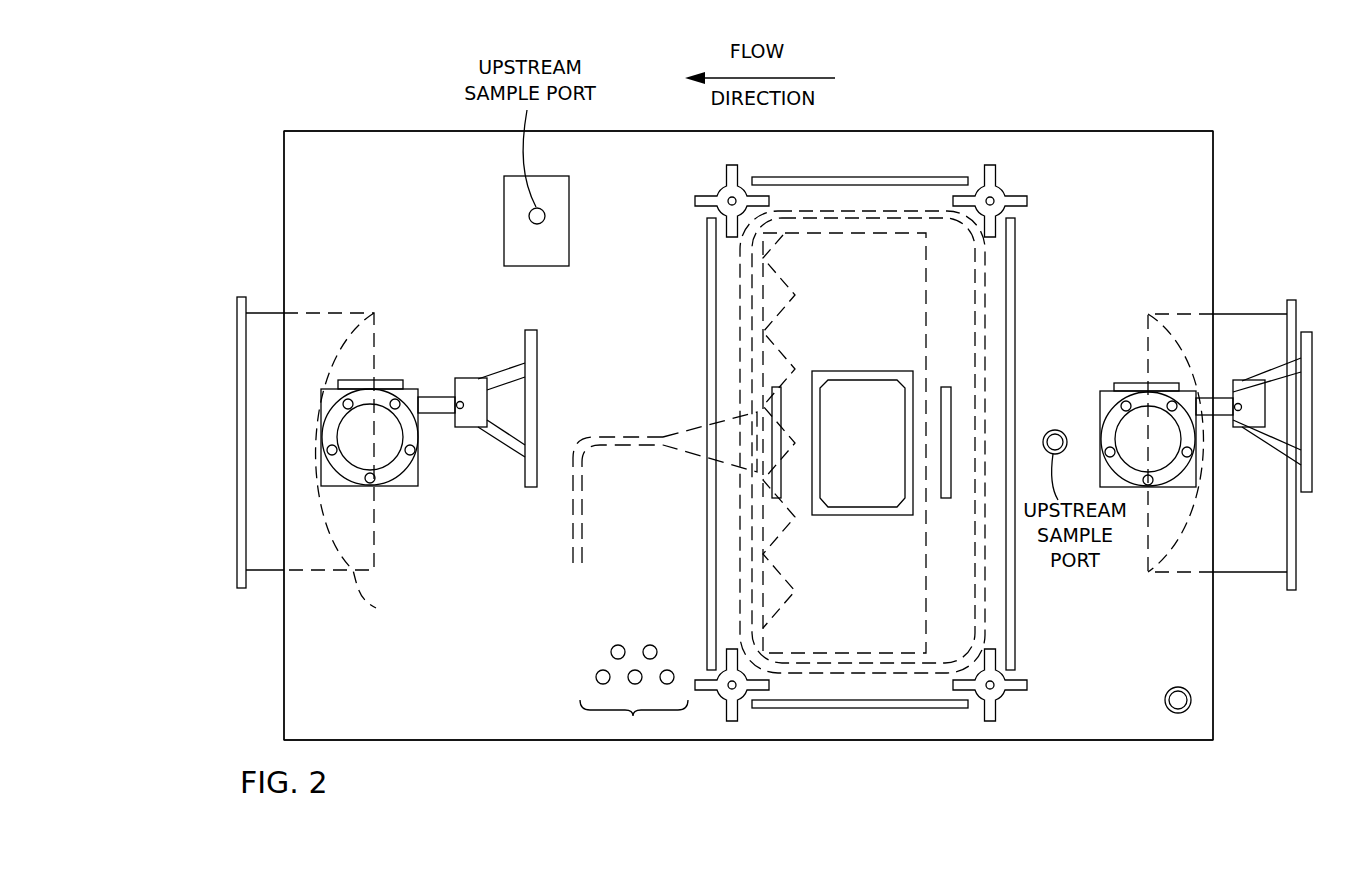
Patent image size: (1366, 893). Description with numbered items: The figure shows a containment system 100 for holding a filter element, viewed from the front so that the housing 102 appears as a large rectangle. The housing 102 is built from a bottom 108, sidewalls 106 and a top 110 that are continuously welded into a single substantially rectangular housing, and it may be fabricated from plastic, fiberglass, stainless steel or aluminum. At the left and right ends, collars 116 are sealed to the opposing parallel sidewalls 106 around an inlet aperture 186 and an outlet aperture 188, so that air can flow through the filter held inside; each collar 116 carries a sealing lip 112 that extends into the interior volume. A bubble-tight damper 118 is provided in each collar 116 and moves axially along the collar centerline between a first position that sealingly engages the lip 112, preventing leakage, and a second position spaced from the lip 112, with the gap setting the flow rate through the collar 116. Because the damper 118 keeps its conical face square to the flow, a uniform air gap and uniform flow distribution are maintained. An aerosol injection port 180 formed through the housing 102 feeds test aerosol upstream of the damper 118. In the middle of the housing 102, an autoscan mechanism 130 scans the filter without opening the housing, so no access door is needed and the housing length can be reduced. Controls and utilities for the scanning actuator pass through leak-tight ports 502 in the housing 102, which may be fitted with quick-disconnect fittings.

The containment system 100 is at (1180, 88).
The housing 102 is at (398, 126).
The sidewalls 106 is at (284, 177).
The bottom 108 is at (445, 740).
The top 110 is at (985, 131).
The sealing lip 112 is at (358, 597).
The collar 116 is at (267, 313).
The bubble-tight damper 118 is at (375, 347).
The autoscan mechanism 130 is at (568, 529).
The aerosol injection port 180 is at (1172, 713).
The inlet aperture 186 is at (1198, 340).
The outlet aperture 188 is at (309, 528).
The ports 502 is at (633, 716).